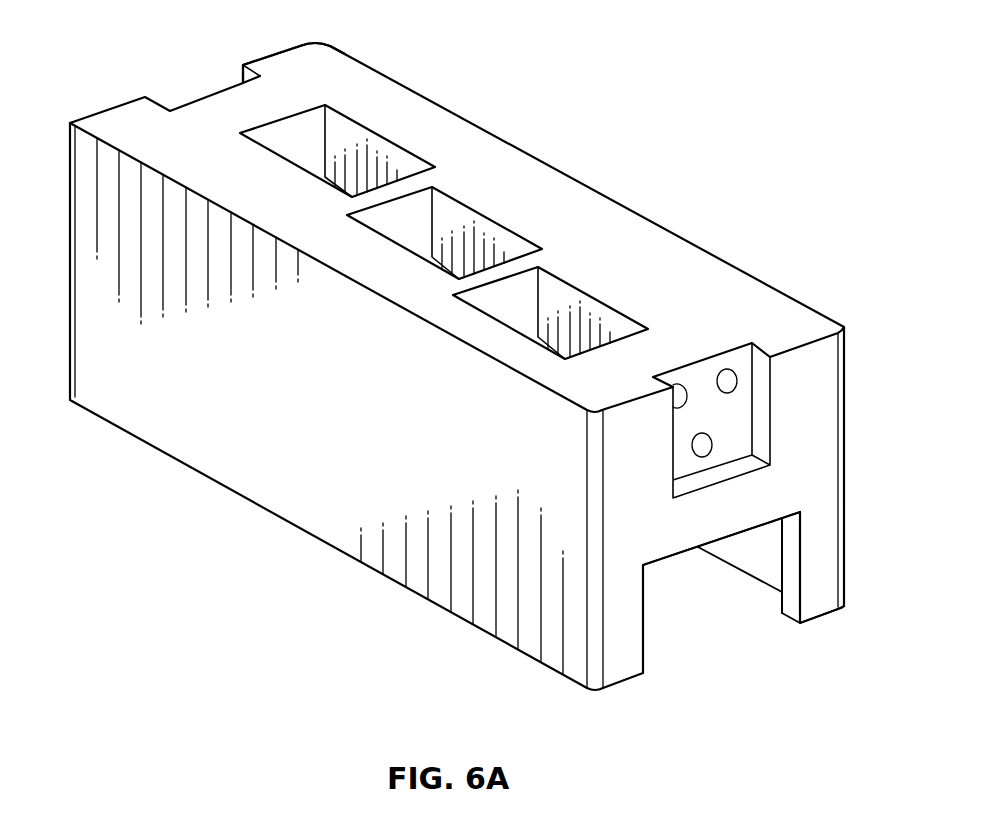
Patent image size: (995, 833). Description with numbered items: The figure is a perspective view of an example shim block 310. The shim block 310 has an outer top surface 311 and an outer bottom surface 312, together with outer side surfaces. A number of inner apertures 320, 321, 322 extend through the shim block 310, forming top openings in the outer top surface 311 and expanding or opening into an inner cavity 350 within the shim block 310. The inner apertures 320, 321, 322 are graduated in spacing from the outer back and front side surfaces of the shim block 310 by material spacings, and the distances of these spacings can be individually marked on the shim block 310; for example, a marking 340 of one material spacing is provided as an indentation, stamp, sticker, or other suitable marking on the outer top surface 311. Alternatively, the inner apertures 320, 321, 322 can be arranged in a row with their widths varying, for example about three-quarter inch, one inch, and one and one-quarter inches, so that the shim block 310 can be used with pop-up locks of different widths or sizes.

The shim block 310 is at (517, 162).
The outer top surface 311 is at (297, 58).
The outer bottom surface 312 is at (817, 622).
The inner aperture 320 is at (353, 146).
The inner aperture 321 is at (450, 226).
The inner aperture 322 is at (570, 315).
The marking 340 is at (468, 319).
The inner cavity 350 is at (718, 612).